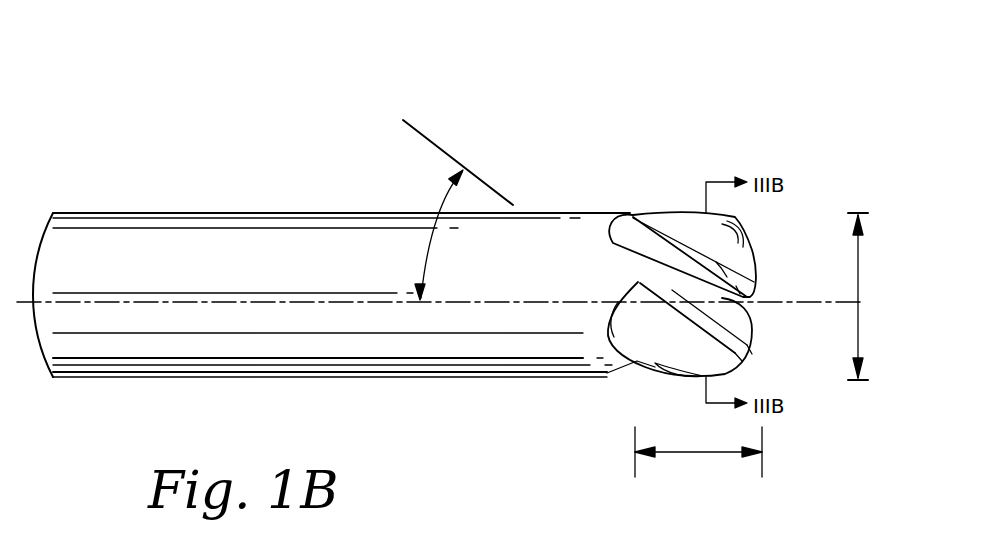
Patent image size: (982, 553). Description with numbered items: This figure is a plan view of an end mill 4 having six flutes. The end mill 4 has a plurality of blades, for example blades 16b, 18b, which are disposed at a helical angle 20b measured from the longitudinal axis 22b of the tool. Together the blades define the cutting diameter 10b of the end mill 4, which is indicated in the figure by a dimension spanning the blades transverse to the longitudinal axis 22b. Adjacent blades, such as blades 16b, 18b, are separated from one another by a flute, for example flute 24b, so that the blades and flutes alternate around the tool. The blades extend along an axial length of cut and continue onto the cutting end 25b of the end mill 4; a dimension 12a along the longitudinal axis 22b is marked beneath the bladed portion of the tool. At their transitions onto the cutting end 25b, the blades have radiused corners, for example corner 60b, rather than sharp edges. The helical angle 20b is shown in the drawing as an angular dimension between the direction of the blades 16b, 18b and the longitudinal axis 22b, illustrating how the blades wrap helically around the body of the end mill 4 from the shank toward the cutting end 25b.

The end mill 4 is at (480, 120).
The cutting diameter 10b is at (862, 308).
The cutting portion length 12a is at (700, 453).
The blade 16b is at (760, 262).
The blade 18b is at (755, 347).
The helical angle 20b is at (437, 207).
The longitudinal axis 22b is at (68, 300).
The flute 24b is at (748, 306).
The cutting end 25b is at (752, 242).
The radiused corner 60b is at (745, 245).